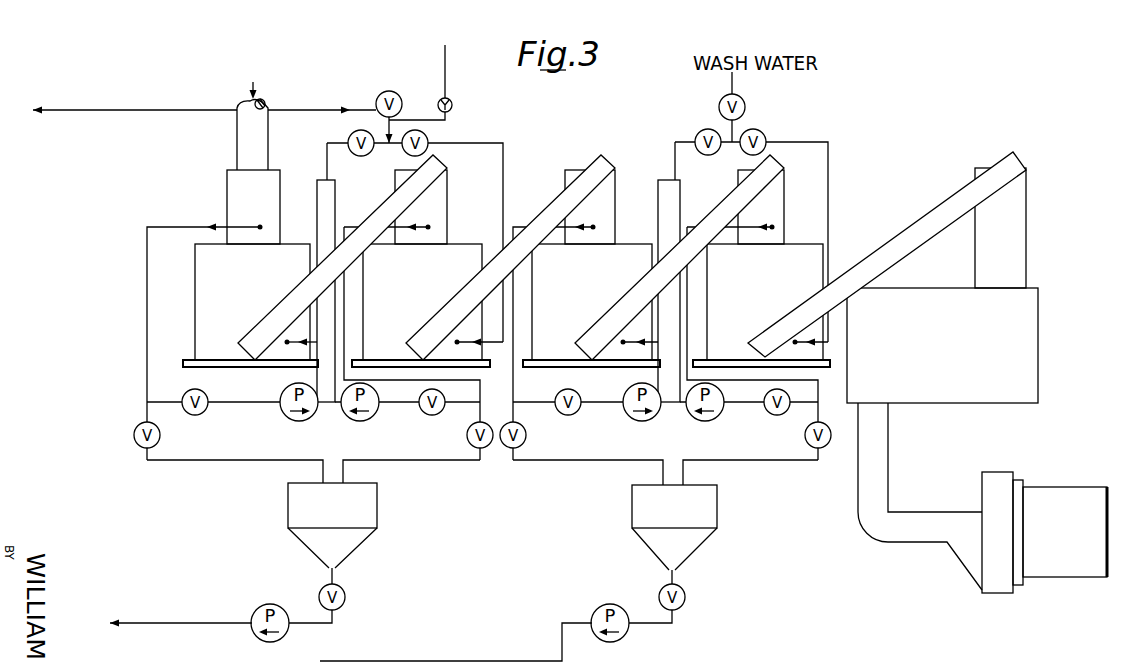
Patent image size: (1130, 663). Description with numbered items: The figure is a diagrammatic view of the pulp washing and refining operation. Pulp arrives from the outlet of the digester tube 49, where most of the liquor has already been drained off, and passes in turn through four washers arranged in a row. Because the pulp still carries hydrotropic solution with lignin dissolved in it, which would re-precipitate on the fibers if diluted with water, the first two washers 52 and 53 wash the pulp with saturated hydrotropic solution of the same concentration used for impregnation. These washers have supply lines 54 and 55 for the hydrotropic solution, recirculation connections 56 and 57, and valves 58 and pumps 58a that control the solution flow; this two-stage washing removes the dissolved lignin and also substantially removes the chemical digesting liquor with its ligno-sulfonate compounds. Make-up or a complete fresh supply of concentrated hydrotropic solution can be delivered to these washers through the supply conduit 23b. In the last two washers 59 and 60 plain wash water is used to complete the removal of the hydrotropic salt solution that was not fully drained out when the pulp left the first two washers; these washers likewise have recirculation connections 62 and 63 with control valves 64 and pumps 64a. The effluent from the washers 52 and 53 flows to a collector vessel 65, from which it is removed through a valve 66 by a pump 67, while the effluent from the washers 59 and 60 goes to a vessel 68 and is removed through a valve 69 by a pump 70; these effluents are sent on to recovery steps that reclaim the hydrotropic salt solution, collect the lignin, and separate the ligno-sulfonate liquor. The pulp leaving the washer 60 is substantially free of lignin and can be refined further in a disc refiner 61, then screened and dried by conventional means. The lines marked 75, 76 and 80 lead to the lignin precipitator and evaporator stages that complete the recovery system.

The supply conduit 23b is at (445, 70).
The digester tube 49 is at (269, 105).
The washer 52 is at (240, 281).
The washer 53 is at (420, 281).
The supply line 54 is at (327, 147).
The supply line 55 is at (471, 143).
The recirculation connection 56 is at (239, 401).
The recirculation connection 57 is at (408, 404).
The valves 58 is at (408, 153).
The pumps 58a is at (362, 421).
The washer 59 is at (607, 280).
The washer 60 is at (772, 280).
The disc refiner 61 is at (1002, 478).
The recirculation connection 62 is at (614, 404).
The recirculation connection 63 is at (751, 405).
The control valves 64 is at (748, 130).
The pumps 64a is at (699, 419).
The collector vessel 65 is at (345, 518).
The valve 66 is at (319, 592).
The pump 67 is at (266, 605).
The vessel 68 is at (685, 520).
The valve 69 is at (660, 590).
The pump 70 is at (599, 610).
The lignin precipitator line 75 is at (455, 642).
The evaporator line 76 is at (200, 101).
The evaporator line 80 is at (171, 613).